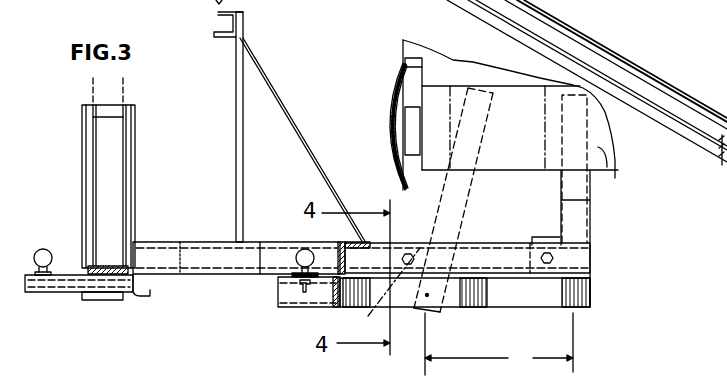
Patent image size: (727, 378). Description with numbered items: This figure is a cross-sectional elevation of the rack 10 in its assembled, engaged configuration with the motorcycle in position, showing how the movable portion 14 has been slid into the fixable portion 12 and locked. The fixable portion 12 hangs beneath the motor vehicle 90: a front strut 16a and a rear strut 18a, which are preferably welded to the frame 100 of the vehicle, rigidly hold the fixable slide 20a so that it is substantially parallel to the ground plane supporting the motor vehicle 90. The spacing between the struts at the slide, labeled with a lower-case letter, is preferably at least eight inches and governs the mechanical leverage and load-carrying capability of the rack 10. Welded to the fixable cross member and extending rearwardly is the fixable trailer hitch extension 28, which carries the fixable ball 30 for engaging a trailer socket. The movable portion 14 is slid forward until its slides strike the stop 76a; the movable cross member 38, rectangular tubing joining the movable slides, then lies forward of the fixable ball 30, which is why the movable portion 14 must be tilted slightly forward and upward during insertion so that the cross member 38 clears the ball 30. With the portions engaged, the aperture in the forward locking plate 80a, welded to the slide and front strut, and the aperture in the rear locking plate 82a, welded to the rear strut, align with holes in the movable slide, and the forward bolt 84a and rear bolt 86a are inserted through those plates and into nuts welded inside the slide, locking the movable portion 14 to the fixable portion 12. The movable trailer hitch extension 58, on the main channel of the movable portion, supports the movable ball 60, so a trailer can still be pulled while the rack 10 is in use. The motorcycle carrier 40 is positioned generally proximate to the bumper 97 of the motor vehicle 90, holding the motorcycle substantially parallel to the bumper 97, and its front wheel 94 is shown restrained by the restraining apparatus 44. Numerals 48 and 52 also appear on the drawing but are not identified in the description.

The rack 10 is at (67, 170).
The fixable portion 12 is at (505, 318).
The movable portion 14 is at (214, 291).
The front strut 16a is at (592, 225).
The rear strut 18a is at (467, 198).
The fixable slide 20a is at (542, 295).
The fixable trailer hitch extension 28 is at (297, 298).
The fixable ball 30 is at (304, 248).
The movable cross member 38 is at (345, 246).
The motorcycle carrier 40 is at (107, 312).
The restraining apparatus 44 is at (75, 220).
The inner tube walls 48 is at (93, 133).
The channel rail 52 is at (547, 15).
The movable trailer hitch extension 58 is at (47, 293).
The movable ball 60 is at (50, 243).
The stop 76a is at (590, 262).
The forward locking plate 80a is at (547, 252).
The rear locking plate 82a is at (387, 295).
The forward bolt 84a is at (548, 245).
The rear bolt 86a is at (412, 252).
The motor vehicle 90 is at (622, 377).
The front wheel 94 is at (119, 93).
The bumper 97 is at (398, 78).
The frame 100 is at (608, 172).